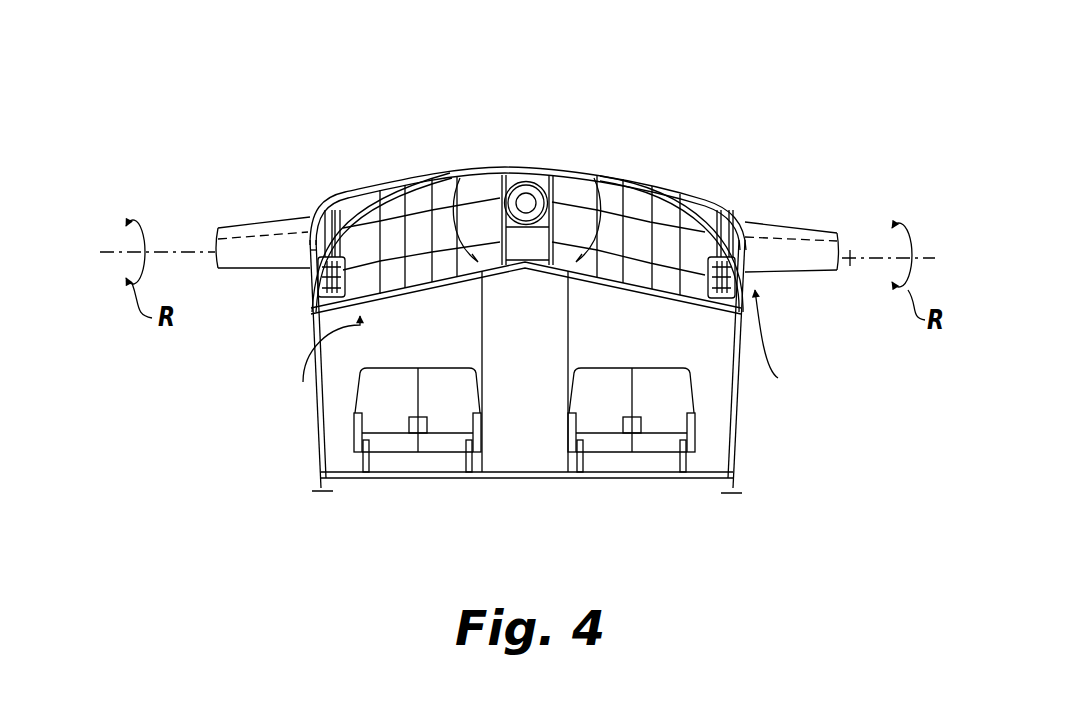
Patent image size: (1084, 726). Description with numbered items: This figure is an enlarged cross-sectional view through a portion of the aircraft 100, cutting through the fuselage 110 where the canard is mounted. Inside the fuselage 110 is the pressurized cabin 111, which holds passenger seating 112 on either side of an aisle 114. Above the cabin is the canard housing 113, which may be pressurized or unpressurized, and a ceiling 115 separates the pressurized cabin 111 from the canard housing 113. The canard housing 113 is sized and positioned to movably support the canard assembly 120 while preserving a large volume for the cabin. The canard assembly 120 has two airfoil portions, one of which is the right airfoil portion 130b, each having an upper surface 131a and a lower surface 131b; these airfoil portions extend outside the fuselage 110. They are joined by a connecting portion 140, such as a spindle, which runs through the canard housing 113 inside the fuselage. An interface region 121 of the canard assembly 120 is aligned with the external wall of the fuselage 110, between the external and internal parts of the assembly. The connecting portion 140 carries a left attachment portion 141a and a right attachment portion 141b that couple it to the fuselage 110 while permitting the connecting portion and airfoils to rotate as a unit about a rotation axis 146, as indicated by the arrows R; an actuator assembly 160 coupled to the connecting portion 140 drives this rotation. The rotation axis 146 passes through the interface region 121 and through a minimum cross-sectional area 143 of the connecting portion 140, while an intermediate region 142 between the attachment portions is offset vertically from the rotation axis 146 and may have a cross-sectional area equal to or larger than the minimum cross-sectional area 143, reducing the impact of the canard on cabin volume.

The aircraft 100 is at (238, 86).
The fuselage 110 is at (311, 428).
The pressurized cabin 111 is at (328, 339).
The passenger seating 112 is at (403, 452).
The canard housing 113 is at (540, 169).
The aisle 114 is at (540, 452).
The ceiling 115 is at (303, 382).
The canard assembly 120 is at (392, 138).
The interface region 121 is at (308, 186).
The right airfoil portion 130b is at (263, 226).
The upper surface 131a is at (832, 230).
The lower surface 131b is at (788, 273).
The connecting portion 140 is at (633, 232).
The left attachment portion 141a is at (706, 212).
The right attachment portion 141b is at (344, 210).
The intermediate region 142 is at (478, 195).
The minimum cross-sectional area 143 is at (778, 378).
The rotation axis 146 is at (850, 262).
The actuator assembly 160 is at (526, 203).